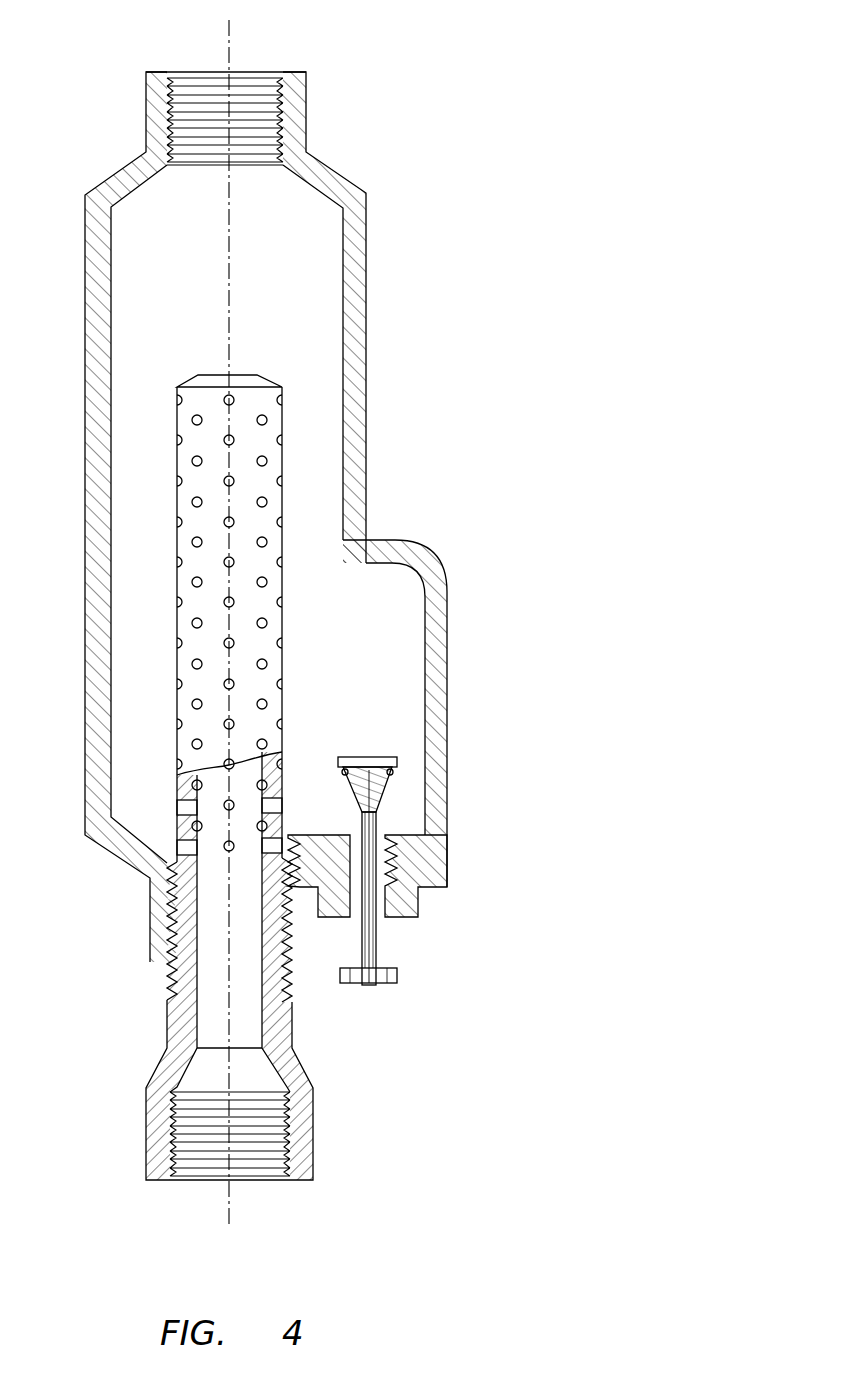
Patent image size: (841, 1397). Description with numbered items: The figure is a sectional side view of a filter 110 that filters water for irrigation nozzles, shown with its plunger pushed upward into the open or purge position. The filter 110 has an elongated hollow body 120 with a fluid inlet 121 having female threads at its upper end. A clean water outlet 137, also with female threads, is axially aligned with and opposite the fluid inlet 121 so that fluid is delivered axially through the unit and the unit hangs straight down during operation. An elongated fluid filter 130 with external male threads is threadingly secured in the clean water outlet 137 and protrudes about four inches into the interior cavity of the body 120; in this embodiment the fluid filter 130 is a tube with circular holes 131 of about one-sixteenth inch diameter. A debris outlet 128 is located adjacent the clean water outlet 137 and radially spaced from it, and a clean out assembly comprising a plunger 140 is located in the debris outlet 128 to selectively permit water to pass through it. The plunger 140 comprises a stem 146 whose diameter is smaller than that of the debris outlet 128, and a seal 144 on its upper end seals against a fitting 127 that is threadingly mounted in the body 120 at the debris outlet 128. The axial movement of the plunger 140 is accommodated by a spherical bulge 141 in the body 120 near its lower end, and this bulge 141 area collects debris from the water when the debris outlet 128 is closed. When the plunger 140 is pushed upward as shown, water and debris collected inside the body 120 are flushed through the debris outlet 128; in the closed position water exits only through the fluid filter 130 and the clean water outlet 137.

The filter 110 is at (421, 191).
The elongated hollow body 120 is at (368, 300).
The fluid inlet 121 is at (266, 46).
The fitting 127 is at (397, 833).
The debris outlet 128 is at (385, 925).
The elongated fluid filter 130 is at (205, 362).
The circular holes 131 is at (264, 621).
The clean water outlet 137 is at (161, 970).
The plunger 140 is at (360, 742).
The bulge 141 is at (430, 556).
The seal 144 is at (393, 772).
The stem 146 is at (356, 953).